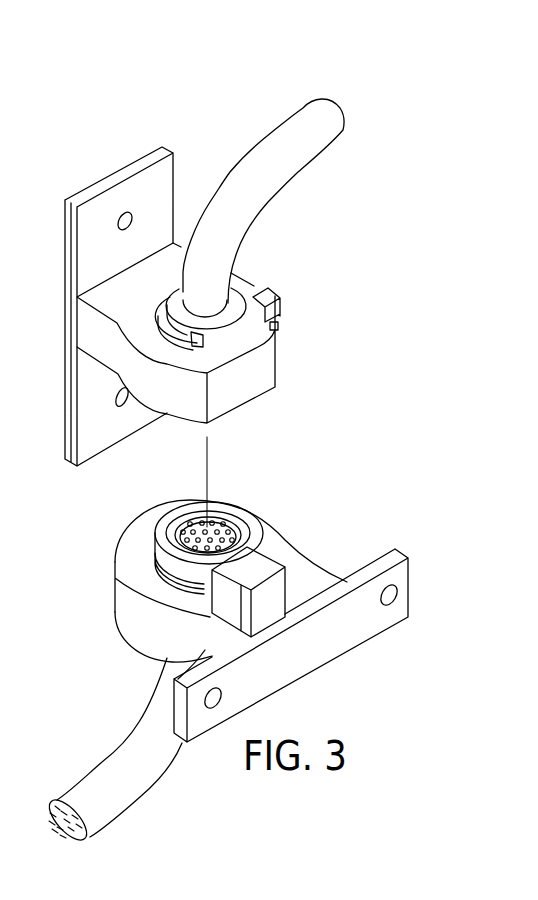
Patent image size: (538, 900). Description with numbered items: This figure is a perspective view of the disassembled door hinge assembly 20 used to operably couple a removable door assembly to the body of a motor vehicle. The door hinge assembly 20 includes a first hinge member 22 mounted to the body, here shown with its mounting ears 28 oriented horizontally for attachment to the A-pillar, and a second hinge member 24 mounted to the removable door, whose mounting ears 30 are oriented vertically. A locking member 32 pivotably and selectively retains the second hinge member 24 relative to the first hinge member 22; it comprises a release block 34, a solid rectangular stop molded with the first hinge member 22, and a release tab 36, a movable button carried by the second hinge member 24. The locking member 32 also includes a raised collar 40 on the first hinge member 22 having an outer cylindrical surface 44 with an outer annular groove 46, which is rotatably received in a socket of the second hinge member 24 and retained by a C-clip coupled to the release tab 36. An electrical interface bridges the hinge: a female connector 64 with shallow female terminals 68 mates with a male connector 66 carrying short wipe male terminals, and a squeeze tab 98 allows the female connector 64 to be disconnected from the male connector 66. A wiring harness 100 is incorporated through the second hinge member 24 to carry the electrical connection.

The door hinge assembly 20 is at (237, 66).
The first hinge member 22 is at (330, 645).
The second hinge member 24 is at (148, 182).
The mounting ears 28 is at (408, 572).
The mounting ears 30 is at (92, 251).
The locking member 32 is at (299, 503).
The release block 34 is at (275, 558).
The release tab 36 is at (272, 293).
The raised collar 40 is at (172, 566).
The outer cylindrical surface 44 is at (155, 543).
The outer annular groove 46 is at (170, 568).
The female connector 64 is at (233, 520).
The male connector 66 is at (258, 292).
The female terminals 68 is at (214, 522).
The squeeze tab 98 is at (240, 280).
The wiring harness 100 is at (337, 112).